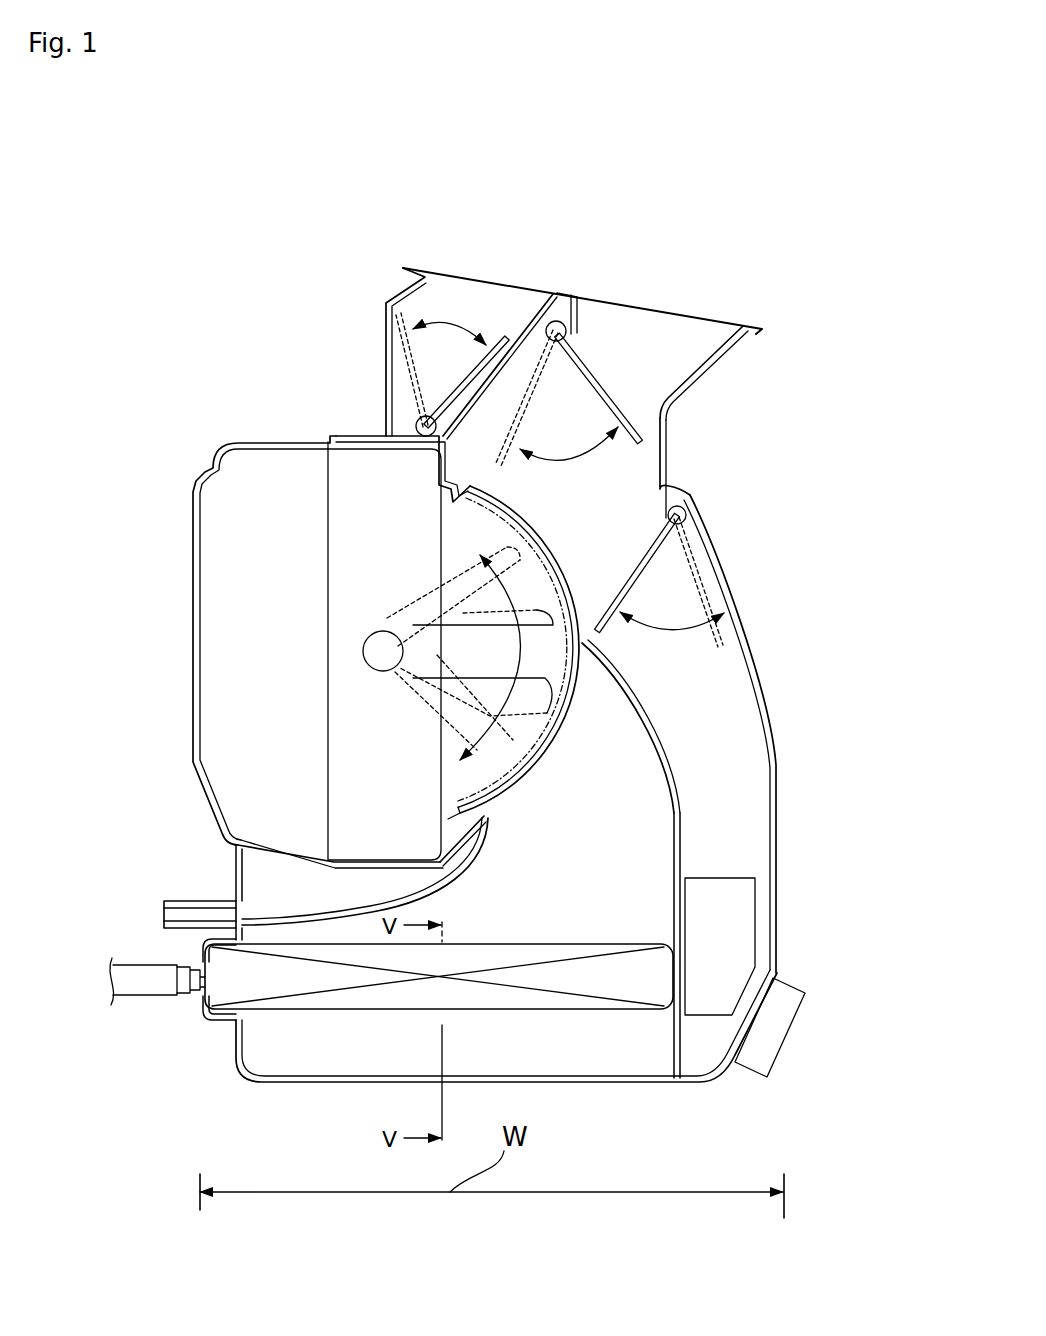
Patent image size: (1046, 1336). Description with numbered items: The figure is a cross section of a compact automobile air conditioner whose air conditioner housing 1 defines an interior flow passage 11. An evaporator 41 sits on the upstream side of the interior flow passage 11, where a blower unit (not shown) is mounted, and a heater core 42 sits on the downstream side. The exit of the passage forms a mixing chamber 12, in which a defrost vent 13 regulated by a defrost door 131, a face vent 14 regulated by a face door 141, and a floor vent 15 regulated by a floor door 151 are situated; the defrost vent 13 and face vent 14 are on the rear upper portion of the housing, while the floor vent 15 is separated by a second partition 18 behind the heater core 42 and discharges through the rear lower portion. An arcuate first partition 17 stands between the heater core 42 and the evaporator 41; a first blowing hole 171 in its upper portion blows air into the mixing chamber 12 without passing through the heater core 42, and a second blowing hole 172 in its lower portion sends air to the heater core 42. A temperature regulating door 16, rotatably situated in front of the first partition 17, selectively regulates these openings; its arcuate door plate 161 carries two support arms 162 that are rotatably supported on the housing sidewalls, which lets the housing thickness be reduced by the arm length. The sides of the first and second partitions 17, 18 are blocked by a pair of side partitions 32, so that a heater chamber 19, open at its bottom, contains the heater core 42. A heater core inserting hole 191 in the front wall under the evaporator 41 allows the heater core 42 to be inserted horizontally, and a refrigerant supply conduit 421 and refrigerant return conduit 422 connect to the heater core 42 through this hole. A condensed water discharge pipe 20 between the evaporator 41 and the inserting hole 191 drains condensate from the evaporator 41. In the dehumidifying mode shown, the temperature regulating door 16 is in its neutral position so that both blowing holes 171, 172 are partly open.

The air conditioner housing 1 is at (190, 652).
The interior flow passage 11 is at (457, 545).
The mixing chamber 12 is at (617, 467).
The defrost vent 13 is at (462, 290).
The defrost door 131 is at (496, 300).
The face vent 14 is at (634, 318).
The face door 141 is at (610, 398).
The floor vent 15 is at (752, 807).
The floor door 151 is at (647, 568).
The temperature regulating door 16 is at (577, 648).
The door plate 161 is at (560, 717).
The support arm 162 is at (434, 635).
The first partition 17 is at (500, 805).
The first blowing hole 171 is at (540, 534).
The second blowing hole 172 is at (540, 765).
The second partition 18 is at (660, 748).
The heater chamber 19 is at (646, 921).
The condensed water discharge pipe 20 is at (163, 910).
The side partition 32 is at (242, 881).
The evaporator 41 is at (333, 783).
The heater core 42 is at (600, 1005).
The heater core inserting hole 191 is at (200, 960).
The refrigerant supply conduit 421 is at (175, 1050).
The refrigerant return conduit 422 is at (140, 993).